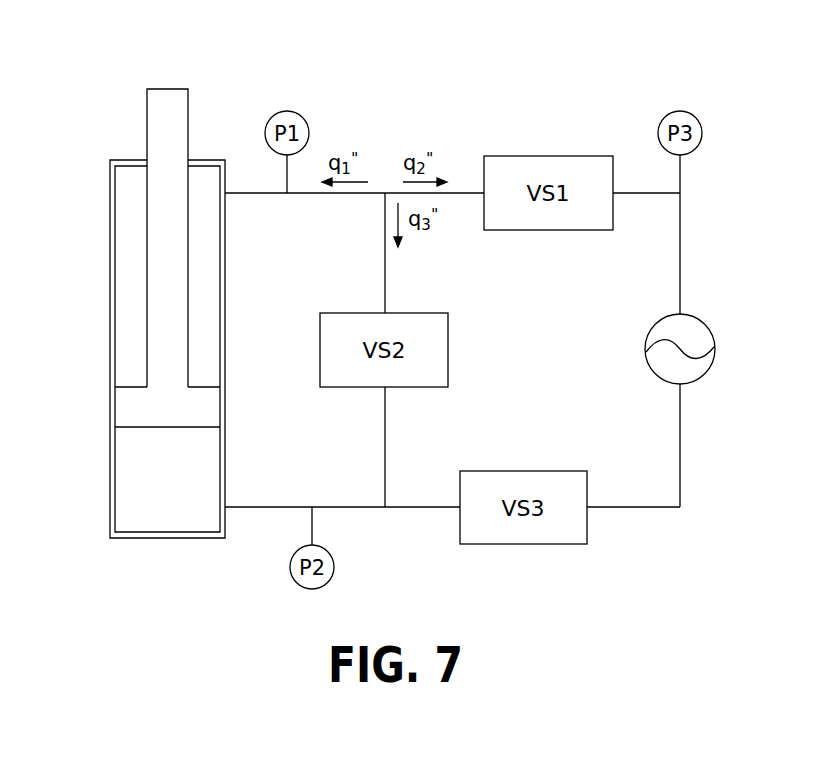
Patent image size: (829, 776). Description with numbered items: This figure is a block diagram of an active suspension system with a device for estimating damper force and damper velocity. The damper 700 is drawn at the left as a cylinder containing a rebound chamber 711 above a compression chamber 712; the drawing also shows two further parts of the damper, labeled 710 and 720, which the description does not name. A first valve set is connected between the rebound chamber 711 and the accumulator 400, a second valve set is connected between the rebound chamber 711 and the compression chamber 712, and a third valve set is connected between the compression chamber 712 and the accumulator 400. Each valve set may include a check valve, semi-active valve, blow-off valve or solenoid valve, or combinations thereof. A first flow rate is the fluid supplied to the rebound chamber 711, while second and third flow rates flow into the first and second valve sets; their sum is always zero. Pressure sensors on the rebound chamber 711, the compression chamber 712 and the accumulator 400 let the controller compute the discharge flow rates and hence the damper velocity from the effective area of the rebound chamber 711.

The damper 700 is at (125, 322).
The cylinder housing 710 is at (110, 218).
The rebound chamber 711 is at (127, 318).
The compression chamber 712 is at (168, 510).
The piston rod 720 is at (167, 95).
The accumulator 400 is at (705, 325).